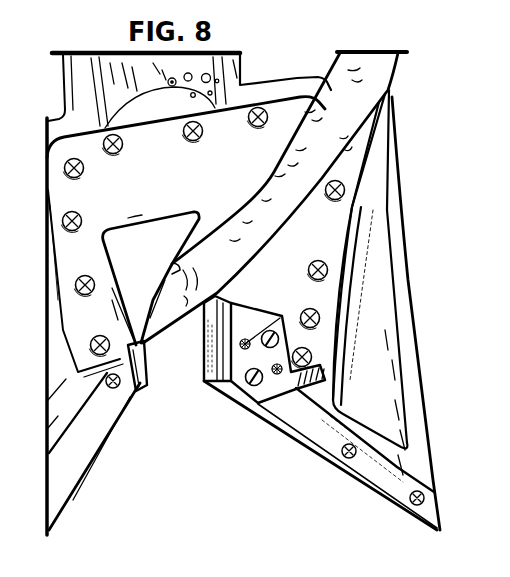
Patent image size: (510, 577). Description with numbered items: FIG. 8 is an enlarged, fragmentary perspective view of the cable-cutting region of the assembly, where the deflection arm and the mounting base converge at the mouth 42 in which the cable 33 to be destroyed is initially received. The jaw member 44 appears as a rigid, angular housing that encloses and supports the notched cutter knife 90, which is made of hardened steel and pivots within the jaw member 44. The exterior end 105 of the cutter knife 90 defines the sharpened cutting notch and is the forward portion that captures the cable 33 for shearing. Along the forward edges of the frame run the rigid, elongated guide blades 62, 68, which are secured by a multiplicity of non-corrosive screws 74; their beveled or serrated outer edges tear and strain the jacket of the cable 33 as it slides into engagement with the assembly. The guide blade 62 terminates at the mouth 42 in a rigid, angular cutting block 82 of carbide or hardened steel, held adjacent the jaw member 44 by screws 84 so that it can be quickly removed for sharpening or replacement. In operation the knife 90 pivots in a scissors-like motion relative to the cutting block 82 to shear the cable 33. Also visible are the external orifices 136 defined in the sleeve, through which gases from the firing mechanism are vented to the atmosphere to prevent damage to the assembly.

The external orifices 136 is at (171, 87).
The jaw member 44 is at (196, 242).
The cable 33 is at (270, 198).
The cutter knife 90 is at (151, 278).
The exterior end of cutter knife 105 is at (138, 306).
The cutting block 82 is at (242, 327).
The mouth 42 is at (163, 356).
The screws 84 is at (280, 367).
The guide blade 68 is at (78, 483).
The guide blade 62 is at (342, 474).
The screws 74 is at (410, 497).